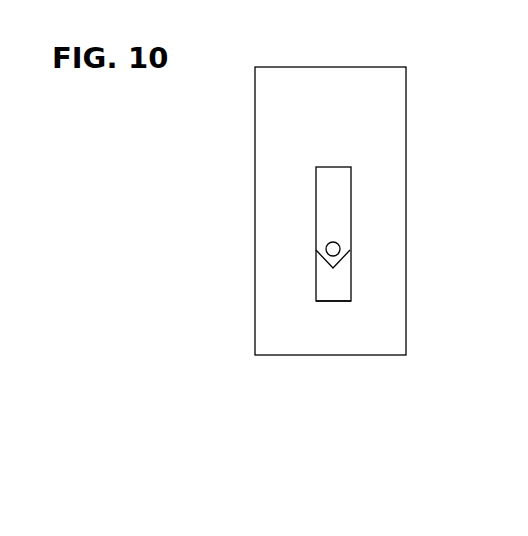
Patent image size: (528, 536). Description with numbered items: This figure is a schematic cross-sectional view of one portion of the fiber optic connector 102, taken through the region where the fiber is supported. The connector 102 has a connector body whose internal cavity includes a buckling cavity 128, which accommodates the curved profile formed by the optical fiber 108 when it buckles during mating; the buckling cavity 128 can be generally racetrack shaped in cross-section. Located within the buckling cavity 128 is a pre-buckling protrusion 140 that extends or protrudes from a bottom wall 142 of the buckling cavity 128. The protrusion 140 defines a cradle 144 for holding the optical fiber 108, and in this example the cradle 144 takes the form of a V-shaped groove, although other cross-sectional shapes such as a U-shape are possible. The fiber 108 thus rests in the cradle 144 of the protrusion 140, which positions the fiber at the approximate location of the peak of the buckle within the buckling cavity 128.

The fiber optic connector 102 is at (255, 128).
The buckling cavity 128 is at (350, 188).
The optical fiber 108 is at (326, 246).
The cradle 144 is at (340, 262).
The pre-buckling protrusion 140 is at (328, 281).
The bottom wall 142 is at (333, 302).